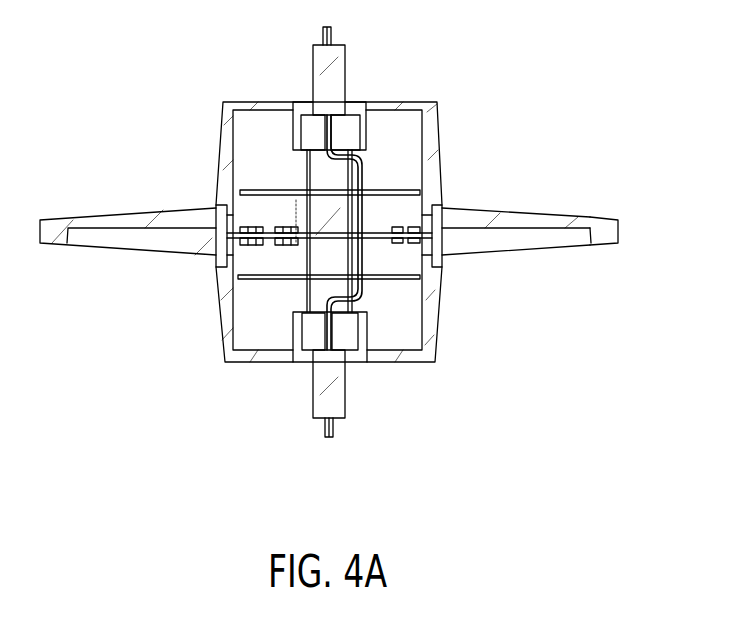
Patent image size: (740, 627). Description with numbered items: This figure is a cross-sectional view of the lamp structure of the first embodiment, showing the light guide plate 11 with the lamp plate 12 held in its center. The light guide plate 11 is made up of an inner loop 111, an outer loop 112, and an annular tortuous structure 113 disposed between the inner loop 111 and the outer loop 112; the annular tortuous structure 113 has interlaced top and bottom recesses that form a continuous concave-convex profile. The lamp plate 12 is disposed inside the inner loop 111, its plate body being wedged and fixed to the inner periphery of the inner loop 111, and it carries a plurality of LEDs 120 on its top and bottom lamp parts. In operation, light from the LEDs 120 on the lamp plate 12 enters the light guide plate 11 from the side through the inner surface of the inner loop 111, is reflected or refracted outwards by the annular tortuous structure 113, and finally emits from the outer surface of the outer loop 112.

The light guide plate 11 is at (620, 113).
The inner loop 111 is at (433, 220).
The outer loop 112 is at (603, 238).
The annular tortuous structure 113 is at (545, 217).
The lamp plate 12 is at (299, 247).
The LEDs 120 is at (288, 229).